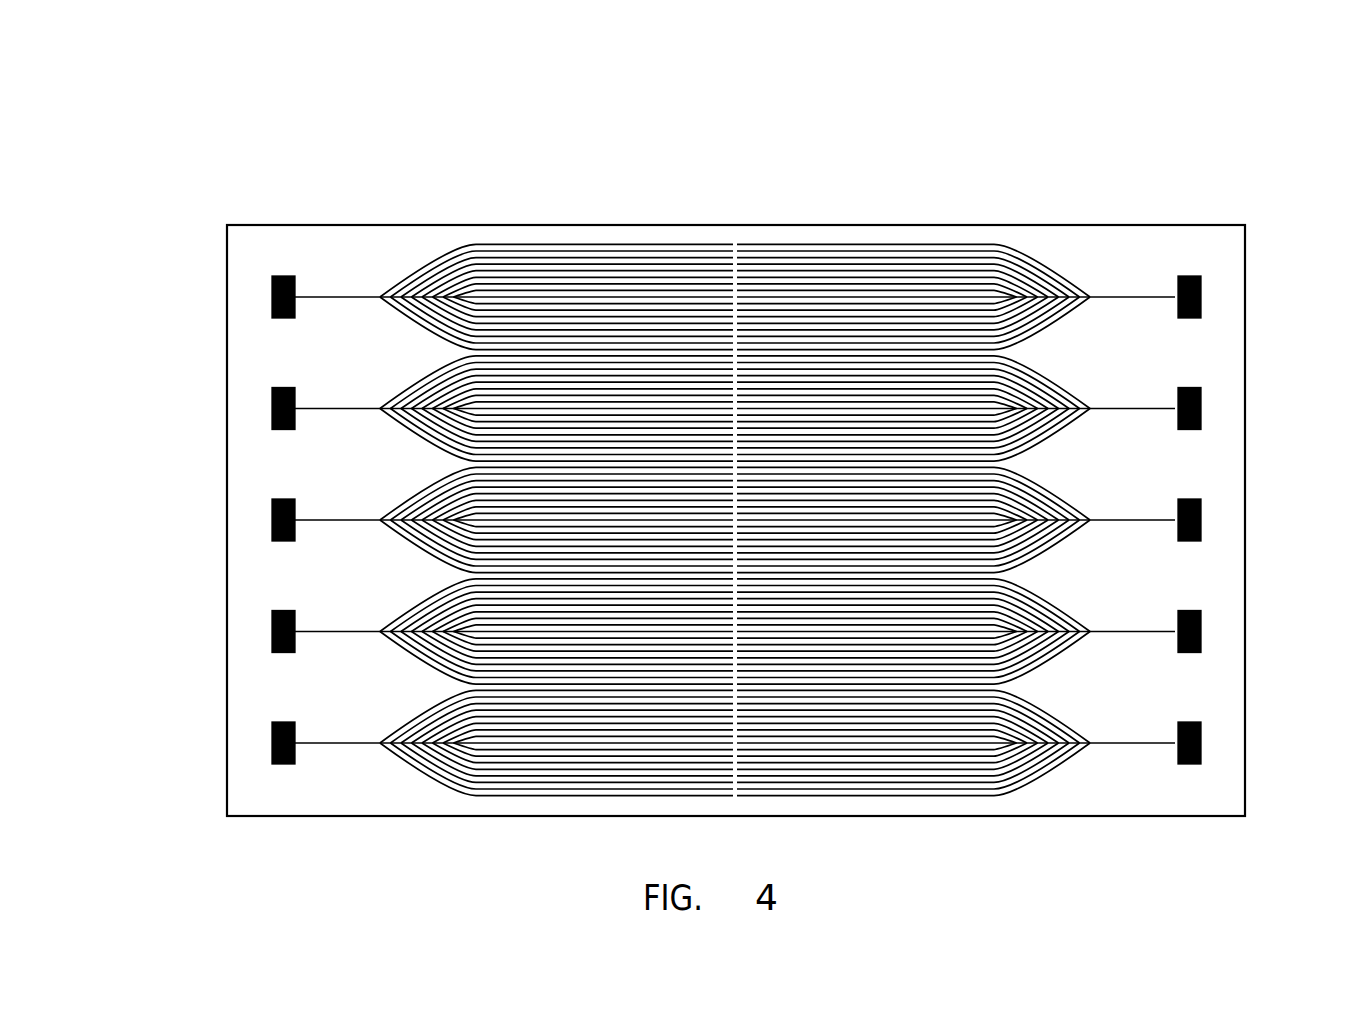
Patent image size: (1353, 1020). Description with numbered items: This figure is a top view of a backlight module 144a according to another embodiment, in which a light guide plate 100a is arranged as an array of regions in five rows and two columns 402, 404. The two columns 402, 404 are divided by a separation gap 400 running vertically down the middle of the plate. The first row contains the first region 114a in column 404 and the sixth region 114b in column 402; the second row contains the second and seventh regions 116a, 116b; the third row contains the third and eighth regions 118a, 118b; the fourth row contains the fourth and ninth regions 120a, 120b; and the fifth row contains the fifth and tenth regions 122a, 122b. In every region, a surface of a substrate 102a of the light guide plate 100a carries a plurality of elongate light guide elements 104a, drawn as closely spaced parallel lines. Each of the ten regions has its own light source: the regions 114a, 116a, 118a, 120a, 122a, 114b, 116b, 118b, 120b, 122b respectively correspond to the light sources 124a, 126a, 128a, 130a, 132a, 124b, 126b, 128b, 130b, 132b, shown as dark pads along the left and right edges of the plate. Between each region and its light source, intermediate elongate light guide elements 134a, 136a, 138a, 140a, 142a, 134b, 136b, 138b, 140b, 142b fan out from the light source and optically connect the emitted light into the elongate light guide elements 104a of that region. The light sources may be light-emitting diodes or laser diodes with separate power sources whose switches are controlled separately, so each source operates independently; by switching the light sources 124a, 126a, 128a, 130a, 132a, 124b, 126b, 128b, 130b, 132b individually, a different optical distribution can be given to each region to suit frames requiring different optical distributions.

The backlight module 144a is at (705, 446).
The light guide plate 100a is at (731, 462).
The substrate 102a is at (430, 472).
The elongate light guide elements 104a is at (1038, 471).
The separation gap 400 is at (736, 223).
The column 402 is at (430, 458).
The column 404 is at (1038, 458).
The first region 114a is at (1097, 255).
The sixth region 114b is at (430, 262).
The second region 116a is at (1112, 392).
The seventh region 116b is at (360, 394).
The third region 118a is at (1112, 504).
The eighth region 118b is at (360, 505).
The fourth region 120a is at (1112, 616).
The ninth region 120b is at (360, 616).
The fifth region 122a is at (1112, 727).
The tenth region 122b is at (360, 728).
The light source 124a is at (1201, 297).
The light source 124b is at (272, 301).
The light source 126a is at (1201, 408).
The light source 126b is at (272, 412).
The light source 128a is at (1201, 520).
The light source 128b is at (272, 524).
The light source 130a is at (1201, 632).
The light source 130b is at (272, 636).
The light source 132a is at (1201, 743).
The light source 132b is at (272, 747).
The intermediate elongate light guide elements 134a is at (982, 258).
The intermediate elongate light guide elements 134b is at (497, 259).
The intermediate elongate light guide elements 136a is at (1038, 387).
The intermediate elongate light guide elements 136b is at (430, 387).
The intermediate elongate light guide elements 138a is at (1038, 498).
The intermediate elongate light guide elements 138b is at (430, 498).
The intermediate elongate light guide elements 140a is at (1038, 610).
The intermediate elongate light guide elements 140b is at (430, 610).
The intermediate elongate light guide elements 142a is at (1038, 721).
The intermediate elongate light guide elements 142b is at (430, 721).